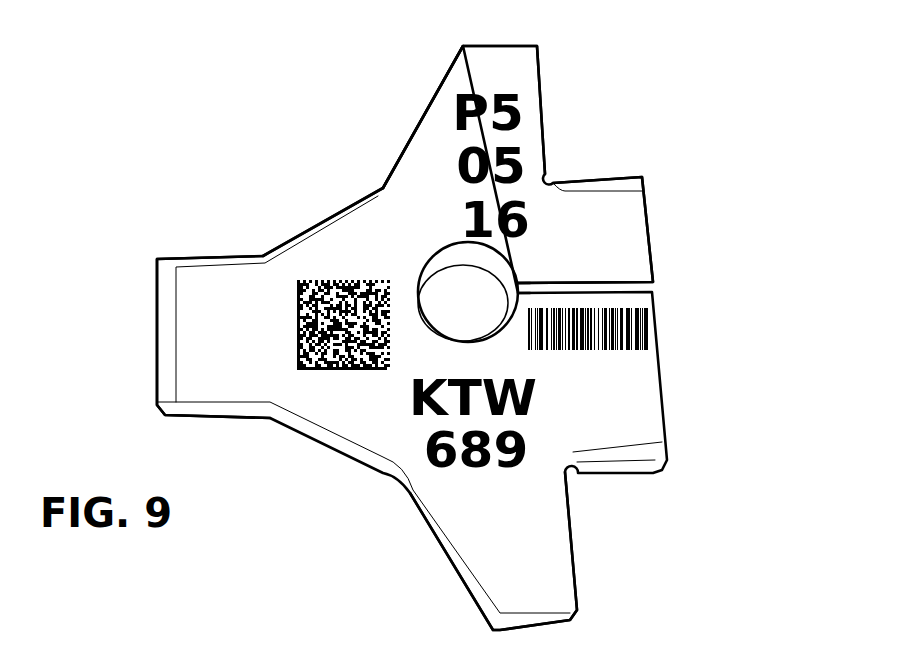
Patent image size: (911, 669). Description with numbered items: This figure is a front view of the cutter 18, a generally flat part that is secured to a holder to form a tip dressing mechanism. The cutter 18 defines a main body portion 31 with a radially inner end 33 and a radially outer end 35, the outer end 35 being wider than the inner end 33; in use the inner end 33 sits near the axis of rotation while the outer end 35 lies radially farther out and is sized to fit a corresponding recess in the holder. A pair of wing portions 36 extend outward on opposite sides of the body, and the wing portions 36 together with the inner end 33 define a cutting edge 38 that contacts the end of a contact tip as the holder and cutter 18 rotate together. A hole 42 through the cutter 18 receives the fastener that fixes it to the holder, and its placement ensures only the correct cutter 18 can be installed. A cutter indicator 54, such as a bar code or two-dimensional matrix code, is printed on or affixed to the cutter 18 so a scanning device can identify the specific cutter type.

The cutter 18 is at (705, 131).
The main body portion 31 is at (417, 220).
The radially inner end 33 is at (215, 283).
The radially outer end 35 is at (620, 240).
The wing portions 36 is at (512, 65).
The cutting edge 38 is at (325, 220).
The hole 42 is at (435, 335).
The cutter indicator 54 is at (297, 327).